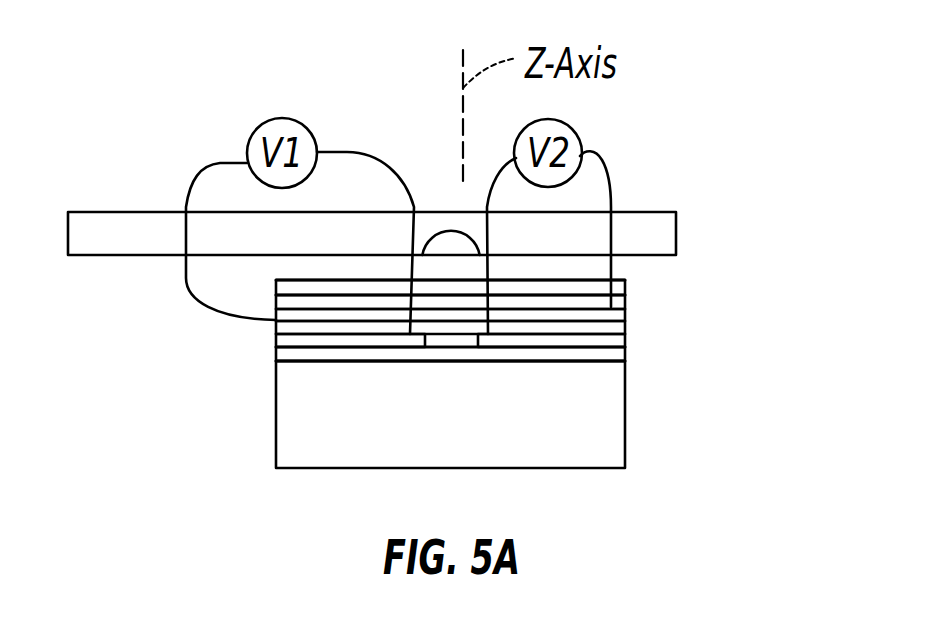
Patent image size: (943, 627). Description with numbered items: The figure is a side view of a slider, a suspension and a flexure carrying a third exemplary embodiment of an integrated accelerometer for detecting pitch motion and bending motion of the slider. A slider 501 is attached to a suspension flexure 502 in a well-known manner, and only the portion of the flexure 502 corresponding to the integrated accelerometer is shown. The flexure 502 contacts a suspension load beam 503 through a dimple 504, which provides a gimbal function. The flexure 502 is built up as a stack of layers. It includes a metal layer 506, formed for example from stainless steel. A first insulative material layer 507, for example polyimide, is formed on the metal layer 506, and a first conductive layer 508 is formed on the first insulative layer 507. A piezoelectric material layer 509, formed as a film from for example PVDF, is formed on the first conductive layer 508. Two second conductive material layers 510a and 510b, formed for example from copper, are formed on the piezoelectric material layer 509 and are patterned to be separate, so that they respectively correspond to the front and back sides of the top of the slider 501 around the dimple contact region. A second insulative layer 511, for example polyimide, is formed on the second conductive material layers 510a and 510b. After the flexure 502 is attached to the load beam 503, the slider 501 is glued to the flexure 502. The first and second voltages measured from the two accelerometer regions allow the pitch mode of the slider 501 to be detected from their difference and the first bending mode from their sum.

The slider 501 is at (282, 468).
The suspension flexure 502 is at (276, 285).
The suspension load beam 503 is at (157, 212).
The dimple 504 is at (448, 264).
The metal layer 506 is at (617, 280).
The first insulative material layer 507 is at (626, 300).
The first conductive layer 508 is at (626, 317).
The piezoelectric material layer 509 is at (626, 328).
The second conductive material layer 510a is at (276, 340).
The second conductive material layer 510b is at (626, 366).
The second insulative layer 511 is at (618, 351).